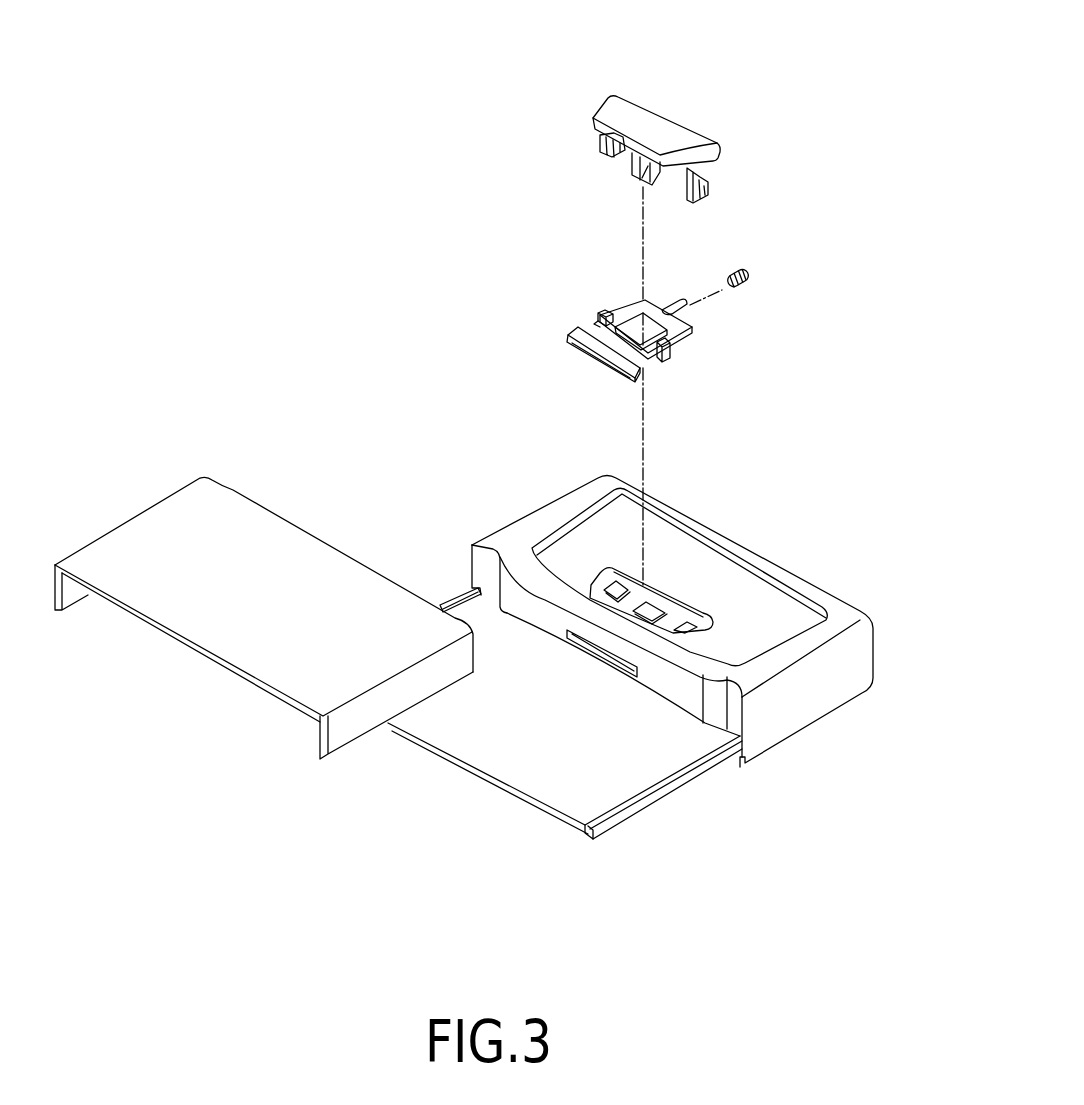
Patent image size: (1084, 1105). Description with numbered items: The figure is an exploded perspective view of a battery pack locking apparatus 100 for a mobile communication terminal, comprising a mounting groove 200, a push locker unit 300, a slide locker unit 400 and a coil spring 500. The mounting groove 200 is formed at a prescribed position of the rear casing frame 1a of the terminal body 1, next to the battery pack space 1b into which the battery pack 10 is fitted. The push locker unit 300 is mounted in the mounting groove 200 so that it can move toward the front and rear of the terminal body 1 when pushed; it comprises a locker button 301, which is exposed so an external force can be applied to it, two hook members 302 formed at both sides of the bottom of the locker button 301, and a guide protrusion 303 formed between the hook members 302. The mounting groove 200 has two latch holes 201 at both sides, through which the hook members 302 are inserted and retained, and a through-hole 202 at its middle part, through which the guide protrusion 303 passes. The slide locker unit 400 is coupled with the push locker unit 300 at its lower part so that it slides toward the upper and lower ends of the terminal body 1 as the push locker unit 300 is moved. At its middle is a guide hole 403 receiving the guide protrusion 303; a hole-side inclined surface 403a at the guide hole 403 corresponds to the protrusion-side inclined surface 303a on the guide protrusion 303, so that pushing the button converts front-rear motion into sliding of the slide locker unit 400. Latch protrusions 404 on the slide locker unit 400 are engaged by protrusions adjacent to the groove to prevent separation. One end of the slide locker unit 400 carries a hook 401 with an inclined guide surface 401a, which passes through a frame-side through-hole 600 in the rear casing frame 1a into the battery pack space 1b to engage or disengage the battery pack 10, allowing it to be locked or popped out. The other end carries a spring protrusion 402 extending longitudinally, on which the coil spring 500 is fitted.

The terminal body 1 is at (630, 632).
The rear casing frame 1a is at (800, 610).
The battery pack space 1b is at (652, 774).
The battery pack 10 is at (129, 511).
The battery pack locking apparatus 100 is at (656, 67).
The mounting groove 200 is at (703, 529).
The latch holes 201 is at (617, 586).
The through-hole 202 is at (652, 617).
The push locker unit 300 is at (665, 145).
The locker button 301 is at (666, 130).
The hook members 302 is at (600, 140).
The guide protrusion 303 is at (660, 164).
The protrusion-side inclined surface 303a is at (656, 181).
The slide locker unit 400 is at (590, 312).
The hook 401 is at (587, 355).
The guide surface 401a is at (617, 367).
The spring protrusion 402 is at (644, 299).
The guide hole 403 is at (598, 321).
The hole-side inclined surface 403a is at (692, 327).
The latch protrusions 404 is at (601, 313).
The coil spring 500 is at (750, 269).
The frame-side through-hole 600 is at (602, 660).